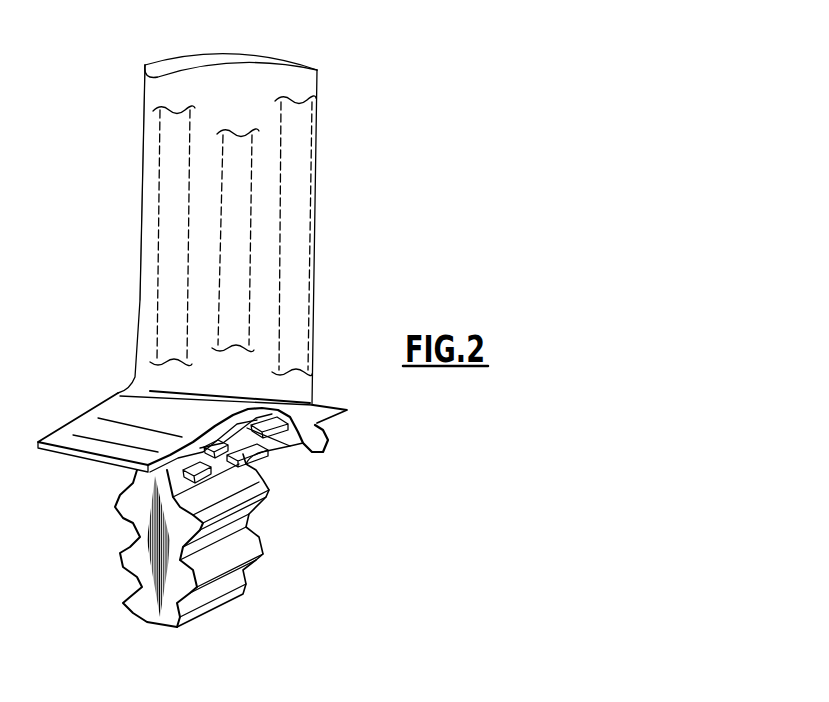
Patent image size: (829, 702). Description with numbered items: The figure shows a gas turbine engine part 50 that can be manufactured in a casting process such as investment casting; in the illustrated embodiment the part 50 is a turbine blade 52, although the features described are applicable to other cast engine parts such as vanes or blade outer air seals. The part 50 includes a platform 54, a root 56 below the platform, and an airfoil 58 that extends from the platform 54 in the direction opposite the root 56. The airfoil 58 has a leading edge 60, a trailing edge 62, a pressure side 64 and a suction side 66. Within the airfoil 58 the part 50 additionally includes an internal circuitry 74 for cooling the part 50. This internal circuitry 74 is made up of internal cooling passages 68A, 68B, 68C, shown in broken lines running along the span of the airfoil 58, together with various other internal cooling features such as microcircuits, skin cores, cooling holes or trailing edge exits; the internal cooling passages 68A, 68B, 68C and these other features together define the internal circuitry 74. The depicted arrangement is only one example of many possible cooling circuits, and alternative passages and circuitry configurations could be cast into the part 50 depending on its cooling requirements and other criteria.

The part 50 is at (348, 48).
The blade 52 is at (122, 160).
The platform 54 is at (92, 430).
The root 56 is at (148, 548).
The airfoil 58 is at (257, 87).
The leading edge 60 is at (142, 232).
The trailing edge 62 is at (317, 192).
The pressure side 64 is at (138, 291).
The suction side 66 is at (126, 88).
The internal cooling passage 68A is at (170, 190).
The internal cooling passage 68B is at (235, 333).
The internal cooling passage 68C is at (297, 147).
The internal circuitry 74 is at (175, 115).